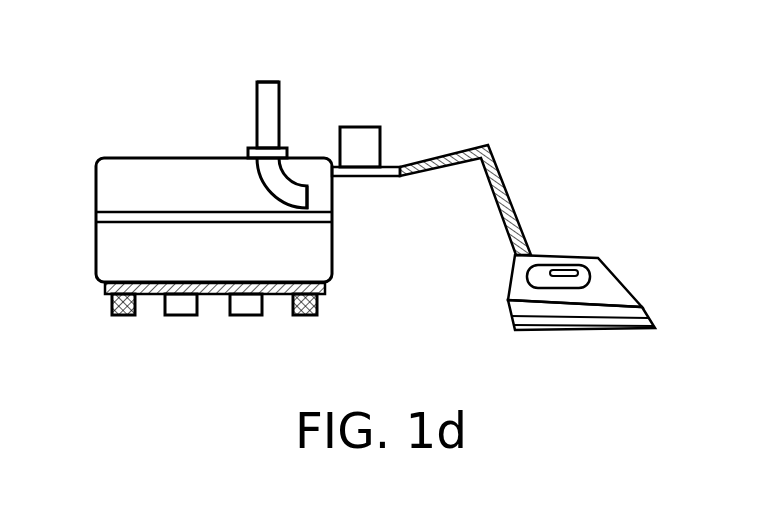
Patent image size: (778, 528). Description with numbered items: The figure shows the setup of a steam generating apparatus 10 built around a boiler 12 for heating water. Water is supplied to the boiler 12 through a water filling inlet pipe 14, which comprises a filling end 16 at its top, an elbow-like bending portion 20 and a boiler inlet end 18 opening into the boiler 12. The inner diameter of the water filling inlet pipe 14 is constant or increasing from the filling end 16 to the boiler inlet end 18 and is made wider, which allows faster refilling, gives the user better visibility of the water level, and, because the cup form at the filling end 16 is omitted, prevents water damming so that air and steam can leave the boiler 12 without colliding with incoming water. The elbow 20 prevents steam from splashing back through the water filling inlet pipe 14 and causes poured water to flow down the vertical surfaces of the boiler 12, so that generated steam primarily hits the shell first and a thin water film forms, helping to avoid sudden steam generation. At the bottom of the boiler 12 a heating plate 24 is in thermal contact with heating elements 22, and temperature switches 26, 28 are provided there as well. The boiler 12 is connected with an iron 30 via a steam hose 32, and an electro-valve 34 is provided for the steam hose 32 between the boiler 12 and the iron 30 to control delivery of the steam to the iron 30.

The steam generating apparatus 10 is at (119, 87).
The boiler 12 is at (110, 192).
The water filling inlet pipe 14 is at (282, 98).
The filling end 16 is at (267, 81).
The boiler inlet end 18 is at (310, 200).
The elbow-like bending portion 20 is at (262, 172).
The heating elements 22 is at (122, 317).
The heating plate 24 is at (325, 285).
The temperature switch 26 is at (180, 317).
The temperature switch 28 is at (245, 317).
The iron 30 is at (617, 275).
The steam hose 32 is at (495, 157).
The electro-valve 34 is at (372, 125).